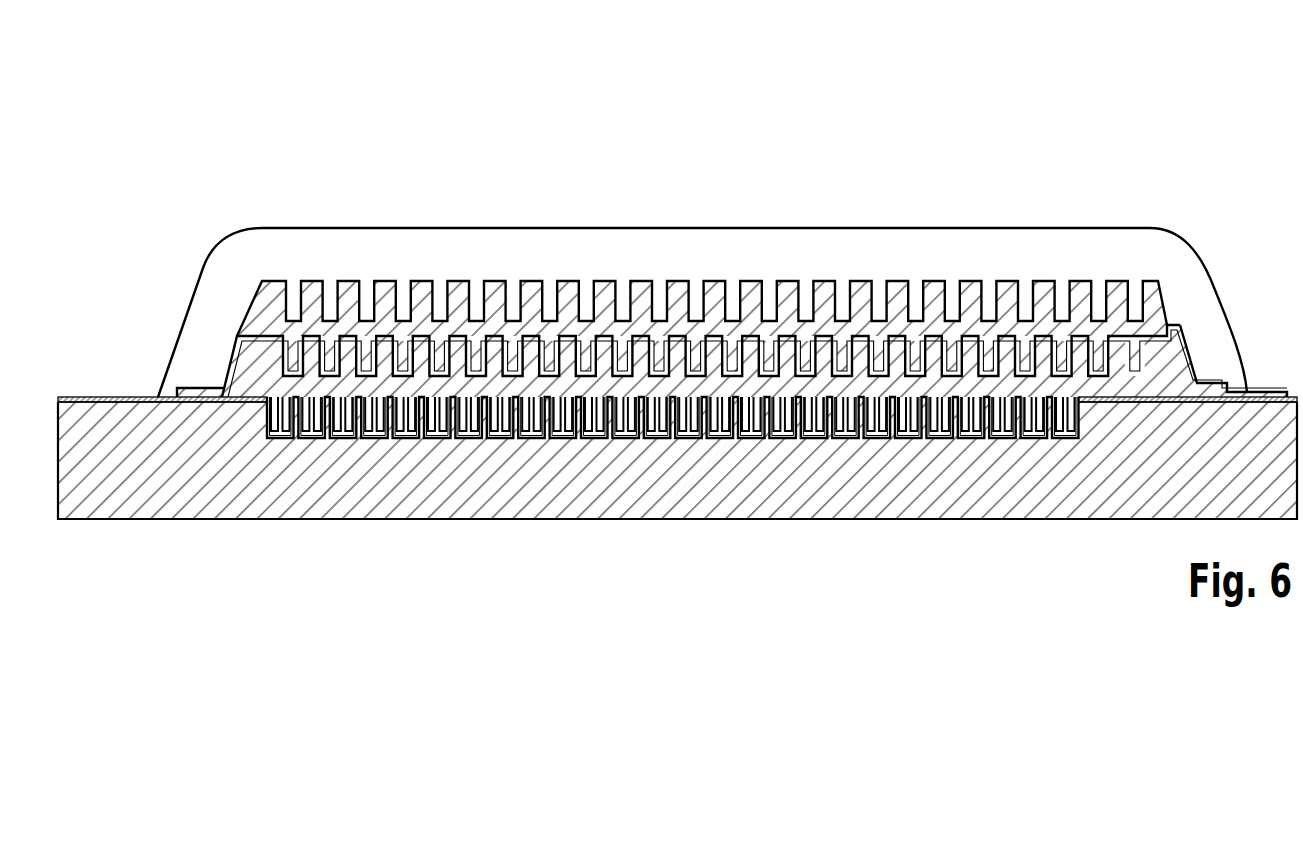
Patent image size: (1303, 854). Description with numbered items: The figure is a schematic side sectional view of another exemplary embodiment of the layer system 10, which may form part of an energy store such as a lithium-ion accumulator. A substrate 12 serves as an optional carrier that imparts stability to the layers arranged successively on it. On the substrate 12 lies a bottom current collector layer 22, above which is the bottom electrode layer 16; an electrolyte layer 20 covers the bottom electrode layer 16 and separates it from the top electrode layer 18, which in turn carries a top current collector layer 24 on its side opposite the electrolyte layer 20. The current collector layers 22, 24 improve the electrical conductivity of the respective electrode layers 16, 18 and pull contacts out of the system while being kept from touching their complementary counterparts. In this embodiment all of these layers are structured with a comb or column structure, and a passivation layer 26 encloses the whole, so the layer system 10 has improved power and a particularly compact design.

The layer system 10 is at (677, 298).
The substrate 12 is at (740, 493).
The bottom electrode layer 16 is at (245, 370).
The top electrode layer 18 is at (1152, 297).
The electrolyte layer 20 is at (1155, 338).
The bottom current collector layer 22 is at (111, 397).
The top current collector layer 24 is at (1193, 368).
The passivation layer 26 is at (724, 252).